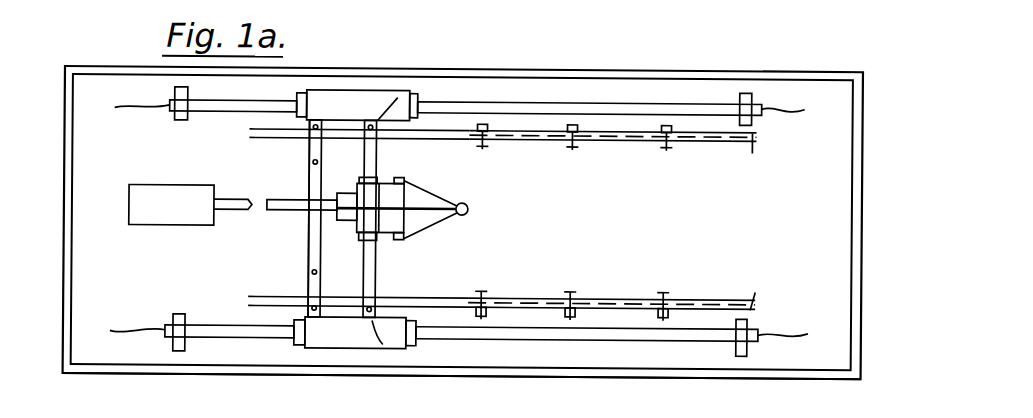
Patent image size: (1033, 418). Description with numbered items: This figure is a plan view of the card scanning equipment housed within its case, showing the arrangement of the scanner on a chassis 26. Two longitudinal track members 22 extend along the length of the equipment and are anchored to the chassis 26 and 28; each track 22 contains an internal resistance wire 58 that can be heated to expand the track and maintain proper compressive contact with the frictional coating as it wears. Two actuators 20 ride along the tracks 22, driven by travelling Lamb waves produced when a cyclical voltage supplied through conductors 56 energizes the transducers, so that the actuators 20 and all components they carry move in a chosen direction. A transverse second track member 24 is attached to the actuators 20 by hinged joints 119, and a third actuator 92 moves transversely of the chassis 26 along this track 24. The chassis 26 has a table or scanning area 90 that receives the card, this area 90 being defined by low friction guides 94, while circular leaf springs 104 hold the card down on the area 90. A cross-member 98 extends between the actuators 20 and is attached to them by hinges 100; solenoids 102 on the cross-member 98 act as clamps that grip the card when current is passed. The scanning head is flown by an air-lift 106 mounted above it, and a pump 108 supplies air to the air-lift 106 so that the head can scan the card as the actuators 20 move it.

The actuator 20 is at (388, 89).
The track 22 is at (620, 100).
The second track member 24 is at (378, 150).
The chassis 26 is at (778, 226).
The chassis anchor 28 is at (175, 96).
The conductor 56 is at (461, 395).
The internal resistance wire 58 is at (115, 108).
The table 90 is at (606, 226).
The third actuator 92 is at (373, 220).
The low friction guide 94 is at (598, 140).
The cross-member 98 is at (313, 226).
The hinge 100 is at (310, 134).
The solenoid 102 is at (313, 161).
The spring 104 is at (484, 146).
The air-lift 106 is at (468, 211).
The pump 108 is at (165, 215).
The hinged joint 119 is at (398, 95).